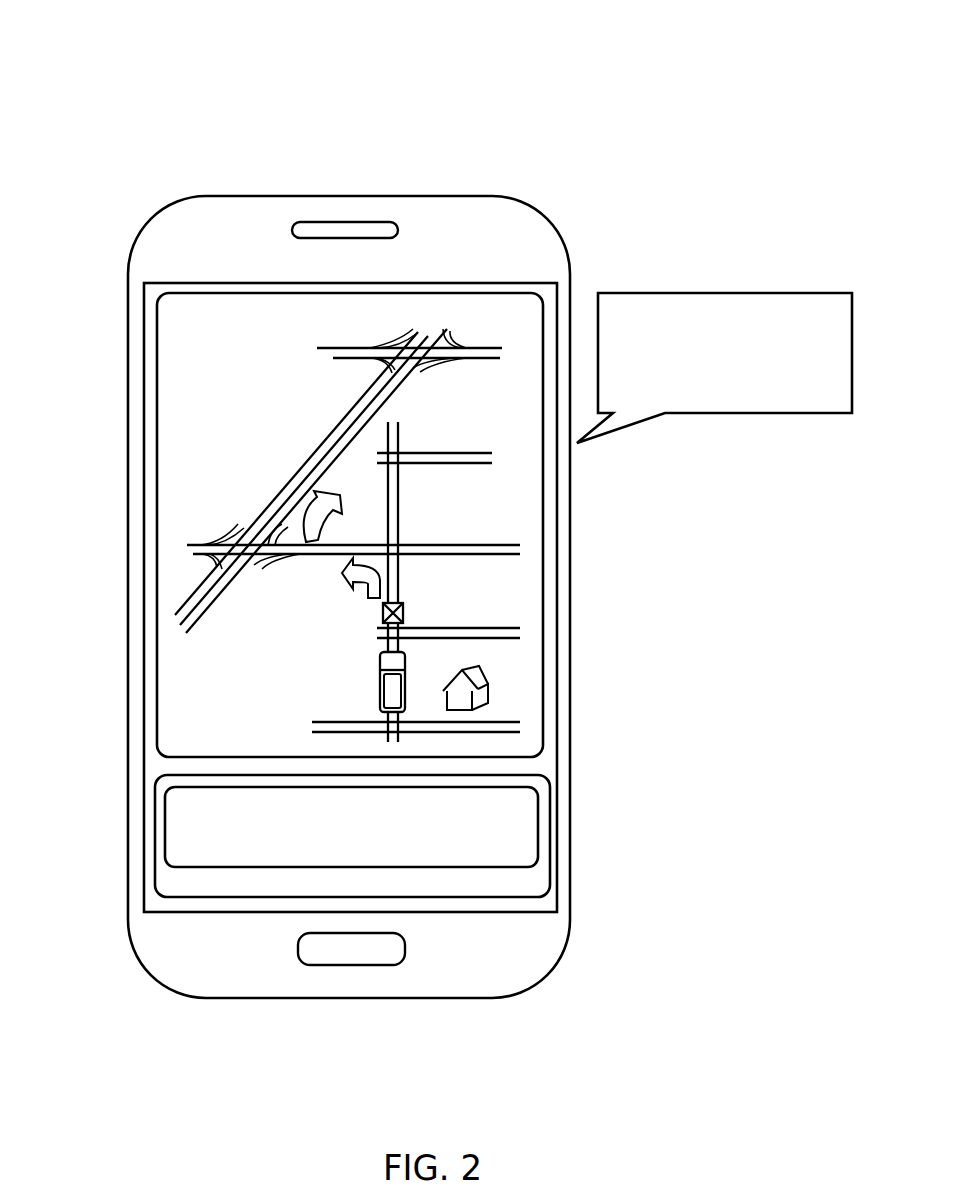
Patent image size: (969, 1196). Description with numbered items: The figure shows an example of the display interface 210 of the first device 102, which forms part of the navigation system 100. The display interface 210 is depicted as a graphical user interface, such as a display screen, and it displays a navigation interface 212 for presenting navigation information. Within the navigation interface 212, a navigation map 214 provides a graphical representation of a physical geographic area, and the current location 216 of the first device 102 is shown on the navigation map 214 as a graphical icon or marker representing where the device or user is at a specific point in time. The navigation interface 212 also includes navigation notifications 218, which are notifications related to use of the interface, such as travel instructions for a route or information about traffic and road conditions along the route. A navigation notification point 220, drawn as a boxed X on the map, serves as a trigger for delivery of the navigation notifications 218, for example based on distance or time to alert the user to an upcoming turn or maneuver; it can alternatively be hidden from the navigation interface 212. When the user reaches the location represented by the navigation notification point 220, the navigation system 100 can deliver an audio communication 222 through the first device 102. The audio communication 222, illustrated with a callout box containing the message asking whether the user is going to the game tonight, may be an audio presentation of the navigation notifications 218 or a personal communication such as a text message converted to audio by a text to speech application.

The navigation system 100 is at (150, 58).
The first device 102 is at (263, 195).
The display interface 210 is at (167, 283).
The navigation interface 212 is at (158, 368).
The navigation map 214 is at (177, 453).
The current location 216 is at (388, 692).
The navigation notifications 218 is at (538, 817).
The navigation notification point 220 is at (405, 607).
The audio communication 222 is at (657, 293).